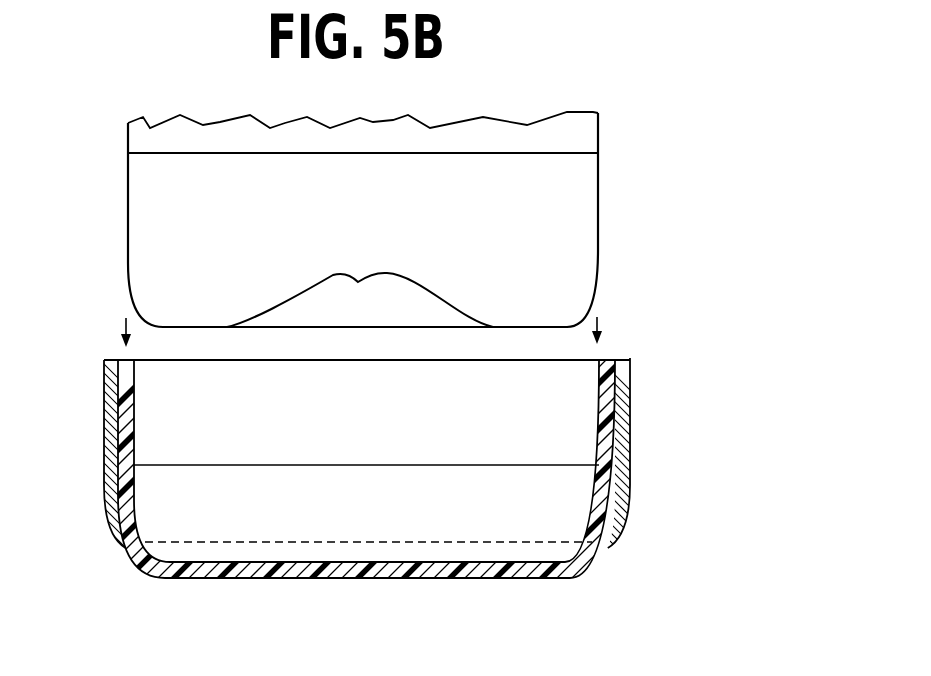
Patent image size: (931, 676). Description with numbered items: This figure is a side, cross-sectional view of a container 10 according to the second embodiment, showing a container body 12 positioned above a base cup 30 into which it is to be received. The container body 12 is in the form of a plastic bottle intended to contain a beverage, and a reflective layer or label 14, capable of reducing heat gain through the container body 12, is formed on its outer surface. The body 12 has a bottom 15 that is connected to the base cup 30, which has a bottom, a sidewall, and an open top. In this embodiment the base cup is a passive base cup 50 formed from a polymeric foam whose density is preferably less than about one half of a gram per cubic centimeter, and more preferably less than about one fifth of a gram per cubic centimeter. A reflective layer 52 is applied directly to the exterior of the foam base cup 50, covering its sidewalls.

The container 10 is at (838, 232).
The container body 12 is at (618, 176).
The reflective layer or label 14 is at (602, 133).
The bottom 15 is at (247, 329).
The base cup 30 is at (652, 404).
The passive base cup 50 is at (140, 567).
The reflective layer 52 is at (103, 445).